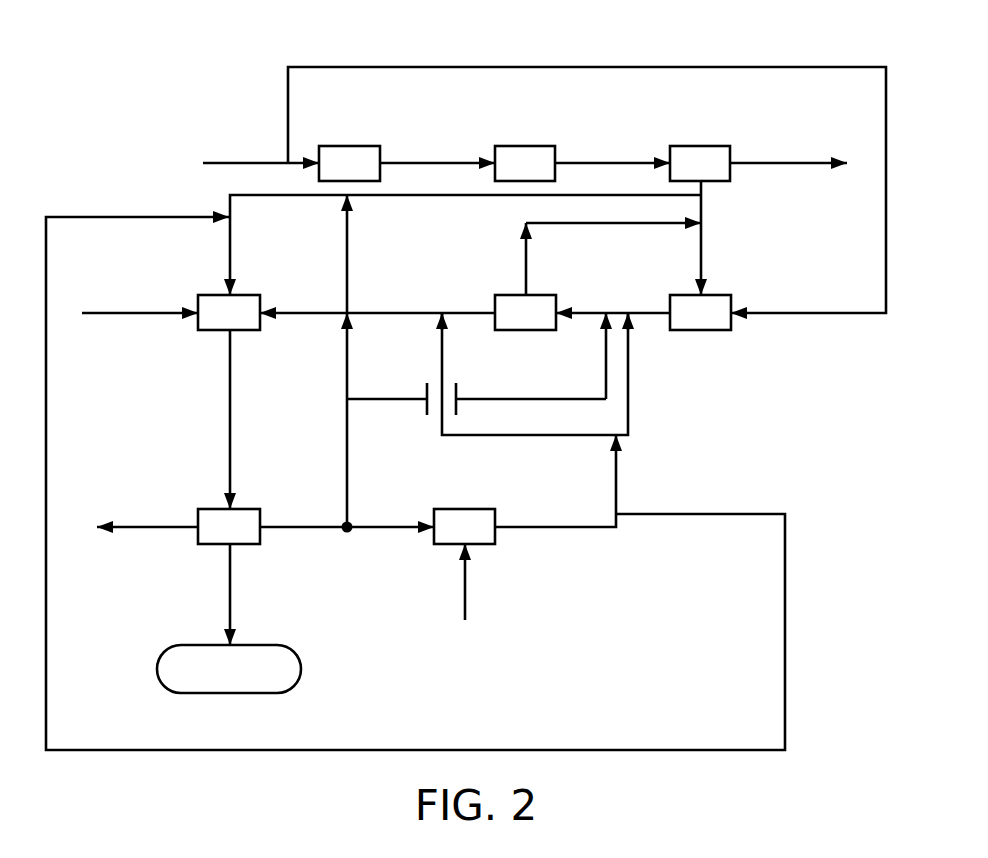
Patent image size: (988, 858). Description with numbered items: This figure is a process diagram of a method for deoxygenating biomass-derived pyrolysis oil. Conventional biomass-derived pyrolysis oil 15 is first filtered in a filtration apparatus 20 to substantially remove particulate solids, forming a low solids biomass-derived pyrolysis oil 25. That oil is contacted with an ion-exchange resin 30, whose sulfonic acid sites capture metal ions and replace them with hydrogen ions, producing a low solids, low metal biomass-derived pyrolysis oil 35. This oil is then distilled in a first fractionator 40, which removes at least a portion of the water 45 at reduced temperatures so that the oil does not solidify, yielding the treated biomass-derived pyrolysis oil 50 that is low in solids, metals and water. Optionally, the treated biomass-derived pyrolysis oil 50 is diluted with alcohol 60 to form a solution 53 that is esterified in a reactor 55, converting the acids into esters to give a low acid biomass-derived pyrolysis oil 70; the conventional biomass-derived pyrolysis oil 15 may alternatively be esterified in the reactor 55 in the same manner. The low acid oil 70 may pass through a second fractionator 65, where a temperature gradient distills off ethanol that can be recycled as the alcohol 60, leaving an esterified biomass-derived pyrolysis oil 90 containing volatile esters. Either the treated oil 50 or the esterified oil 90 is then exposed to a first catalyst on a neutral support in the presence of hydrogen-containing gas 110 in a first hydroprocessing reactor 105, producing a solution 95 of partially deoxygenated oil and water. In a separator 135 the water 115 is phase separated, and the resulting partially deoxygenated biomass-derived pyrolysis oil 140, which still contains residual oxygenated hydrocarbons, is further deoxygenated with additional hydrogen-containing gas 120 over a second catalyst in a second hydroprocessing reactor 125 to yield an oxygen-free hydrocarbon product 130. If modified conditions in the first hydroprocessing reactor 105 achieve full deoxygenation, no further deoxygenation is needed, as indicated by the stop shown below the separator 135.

The biomass-derived pyrolysis oil 15 is at (263, 160).
The filtration apparatus 20 is at (365, 146).
The low solids biomass-derived pyrolysis oil 25 is at (458, 161).
The ion-exchange resin 30 is at (541, 146).
The low solids, low metal biomass-derived pyrolysis oil 35 is at (633, 161).
The first fractionator 40 is at (716, 146).
The water 45 is at (803, 161).
The treated biomass-derived pyrolysis oil 50 is at (478, 198).
The solution 53 is at (701, 243).
The reactor 55 is at (719, 294).
The alcohol 60 is at (617, 227).
The second fractionator 65 is at (542, 294).
The low acid biomass-derived pyrolysis oil 70 is at (653, 309).
The esterified biomass-derived pyrolysis oil 90 is at (387, 309).
The solution of partially deoxygenated biomass-derived pyrolysis oil and water 95 is at (230, 406).
The first hydroprocessing reactor 105 is at (245, 294).
The hydrogen-containing gas 110 is at (142, 309).
The water 115 is at (140, 522).
The additional hydrogen-containing gas 120 is at (463, 580).
The second hydroprocessing reactor 125 is at (482, 508).
The hydrocarbon product 130 is at (628, 373).
The separator 135 is at (245, 508).
The partially deoxygenated biomass-derived pyrolysis oil 140 is at (347, 234).